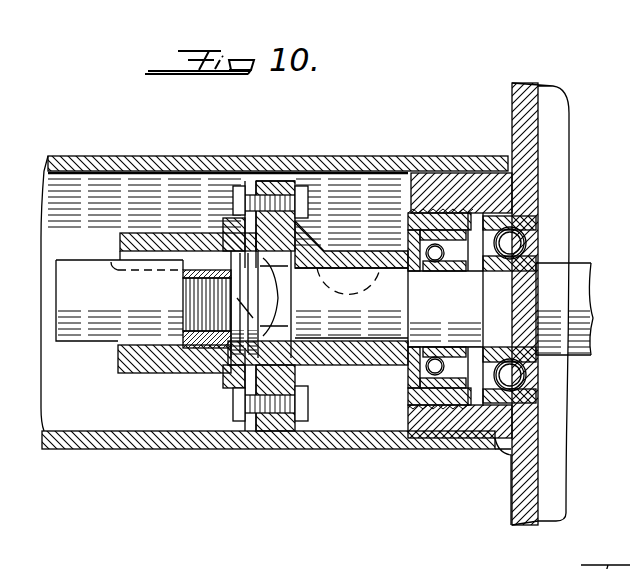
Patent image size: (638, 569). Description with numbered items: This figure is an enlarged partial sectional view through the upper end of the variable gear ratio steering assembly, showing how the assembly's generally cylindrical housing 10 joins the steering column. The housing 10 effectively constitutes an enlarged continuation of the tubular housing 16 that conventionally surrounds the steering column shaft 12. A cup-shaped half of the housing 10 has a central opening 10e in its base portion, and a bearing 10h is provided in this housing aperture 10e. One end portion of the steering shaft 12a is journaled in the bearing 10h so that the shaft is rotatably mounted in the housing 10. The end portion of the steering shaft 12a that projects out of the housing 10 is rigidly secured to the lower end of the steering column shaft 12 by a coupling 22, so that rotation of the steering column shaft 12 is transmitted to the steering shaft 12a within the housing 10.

The housing 10 is at (497, 495).
The central opening 10e is at (524, 387).
The bearing 10h is at (513, 367).
The steering column shaft 12 is at (76, 320).
The steering shaft 12a is at (573, 252).
The tubular housing 16 is at (323, 152).
The coupling 22 is at (287, 375).